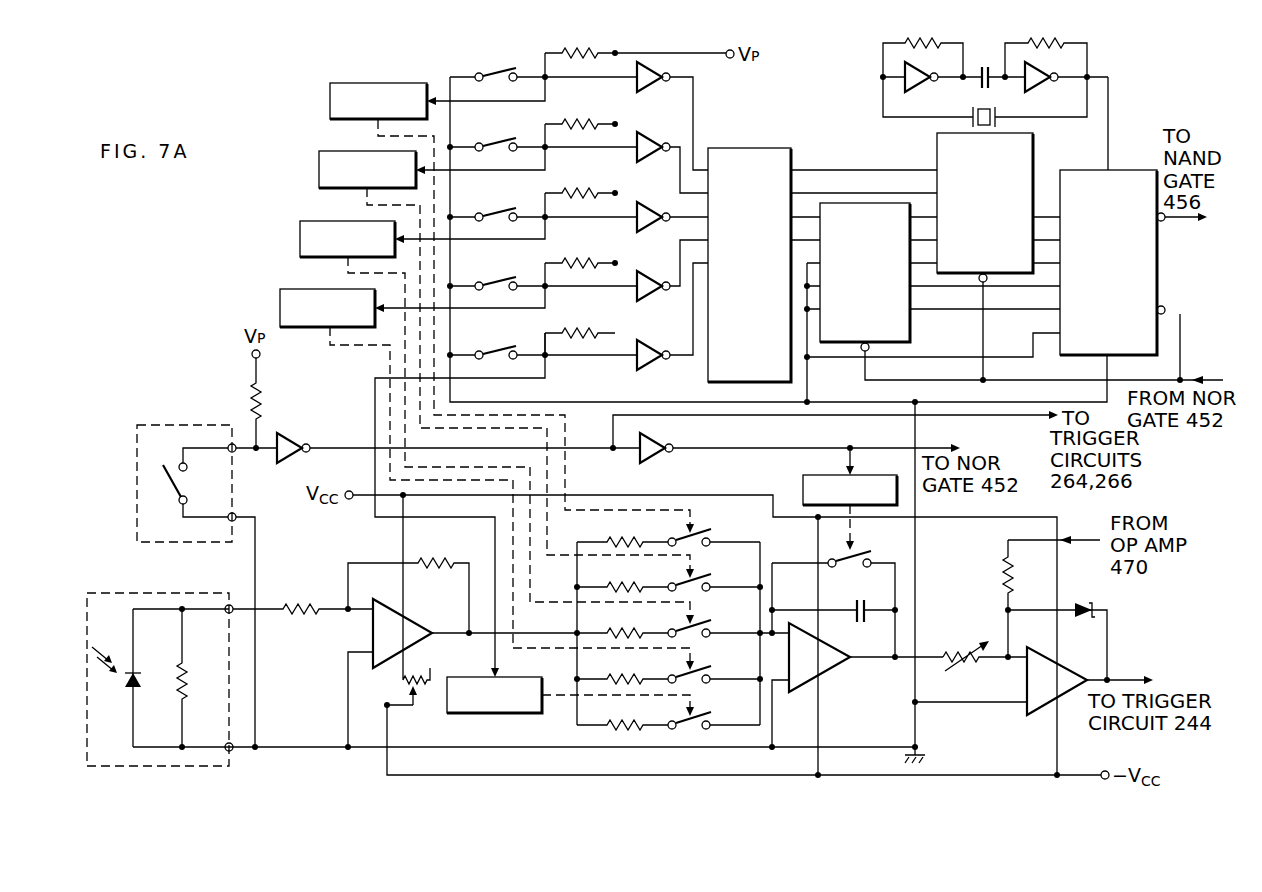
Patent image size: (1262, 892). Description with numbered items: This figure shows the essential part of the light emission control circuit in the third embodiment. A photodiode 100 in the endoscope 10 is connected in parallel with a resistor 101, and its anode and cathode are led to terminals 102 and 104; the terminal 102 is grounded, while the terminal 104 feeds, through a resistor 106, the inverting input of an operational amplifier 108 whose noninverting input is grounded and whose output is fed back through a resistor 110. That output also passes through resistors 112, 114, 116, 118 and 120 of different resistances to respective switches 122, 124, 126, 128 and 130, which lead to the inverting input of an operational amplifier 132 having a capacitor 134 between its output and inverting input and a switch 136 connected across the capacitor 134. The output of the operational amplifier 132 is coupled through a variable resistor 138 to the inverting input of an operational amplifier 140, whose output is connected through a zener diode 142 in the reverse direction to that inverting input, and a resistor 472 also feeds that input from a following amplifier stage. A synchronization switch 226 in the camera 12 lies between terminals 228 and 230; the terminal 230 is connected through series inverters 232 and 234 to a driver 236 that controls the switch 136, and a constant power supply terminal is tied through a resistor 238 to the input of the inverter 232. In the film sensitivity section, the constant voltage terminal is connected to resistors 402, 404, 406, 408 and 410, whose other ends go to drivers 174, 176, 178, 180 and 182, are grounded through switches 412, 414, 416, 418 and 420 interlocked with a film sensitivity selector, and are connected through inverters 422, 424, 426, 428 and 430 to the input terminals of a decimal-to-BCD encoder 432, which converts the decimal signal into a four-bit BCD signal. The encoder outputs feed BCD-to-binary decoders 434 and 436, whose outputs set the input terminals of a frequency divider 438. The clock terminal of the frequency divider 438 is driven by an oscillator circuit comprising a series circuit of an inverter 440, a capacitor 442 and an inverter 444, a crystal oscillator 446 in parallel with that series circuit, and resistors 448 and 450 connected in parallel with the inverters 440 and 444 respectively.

The endoscope 10 is at (120, 588).
The camera 12 is at (165, 417).
The photodiode 100 is at (128, 692).
The resistor 101 is at (175, 680).
The terminal 102 is at (232, 750).
The terminal 104 is at (229, 613).
The resistor 106 is at (302, 618).
The operational amplifier 108 is at (408, 624).
The resistor 110 is at (435, 558).
The resistor 112 is at (622, 530).
The resistor 114 is at (622, 576).
The resistor 116 is at (622, 622).
The resistor 118 is at (622, 668).
The resistor 120 is at (622, 714).
The switch 122 is at (711, 540).
The switch 124 is at (711, 585).
The switch 126 is at (711, 630).
The switch 128 is at (711, 677).
The switch 130 is at (711, 723).
The operational amplifier 132 is at (826, 662).
The capacitor 134 is at (852, 618).
The switch 136 is at (851, 570).
The variable resistor 138 is at (960, 642).
The operational amplifier 140 is at (1027, 679).
The zener diode 142 is at (1080, 618).
The driver 174 is at (355, 83).
The driver 176 is at (340, 158).
The driver 178 is at (320, 226).
The driver 180 is at (300, 295).
The driver 182 is at (520, 713).
The synchronization switch 226 is at (168, 482).
The terminal 228 is at (236, 513).
The terminal 230 is at (236, 452).
The inverter 232 is at (293, 443).
The inverter 234 is at (652, 462).
The driver 236 is at (803, 481).
The resistor 238 is at (264, 396).
The resistor 402 is at (532, 67).
The resistor 404 is at (526, 134).
The resistor 406 is at (516, 204).
The resistor 408 is at (506, 274).
The resistor 410 is at (543, 330).
The switch 412 is at (494, 70).
The switch 414 is at (494, 142).
The switch 416 is at (494, 213).
The switch 418 is at (494, 280).
The switch 420 is at (494, 348).
The inverter 422 is at (653, 92).
The inverter 424 is at (653, 162).
The inverter 426 is at (653, 232).
The inverter 428 is at (653, 301).
The inverter 430 is at (653, 370).
The decimal-to-BCD encoder 432 is at (755, 148).
The BCD-to-binary decoder 434 is at (856, 202).
The BCD-to-binary decoder 436 is at (1033, 142).
The frequency divider 438 is at (1157, 274).
The inverter 440 is at (922, 92).
The capacitor 442 is at (985, 65).
The inverter 444 is at (1042, 92).
The crystal oscillator 446 is at (973, 117).
The resistor 448 is at (923, 46).
The resistor 450 is at (1046, 45).
The resistor 472 is at (1002, 572).